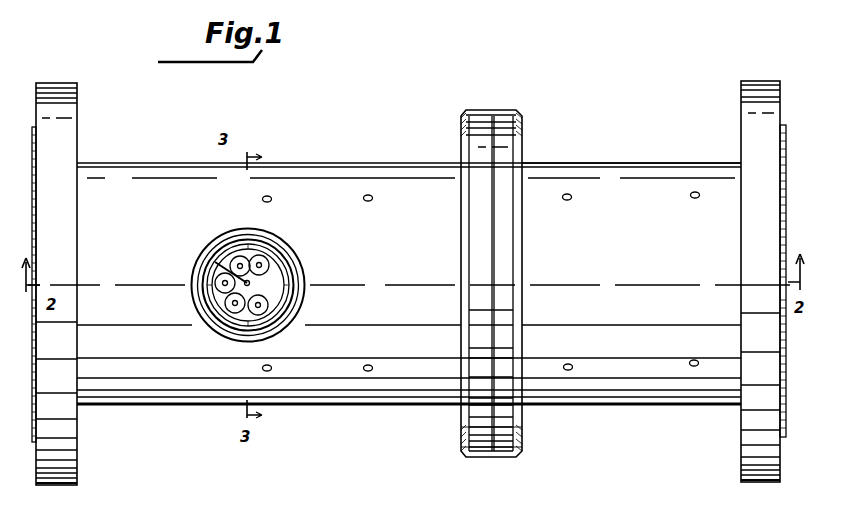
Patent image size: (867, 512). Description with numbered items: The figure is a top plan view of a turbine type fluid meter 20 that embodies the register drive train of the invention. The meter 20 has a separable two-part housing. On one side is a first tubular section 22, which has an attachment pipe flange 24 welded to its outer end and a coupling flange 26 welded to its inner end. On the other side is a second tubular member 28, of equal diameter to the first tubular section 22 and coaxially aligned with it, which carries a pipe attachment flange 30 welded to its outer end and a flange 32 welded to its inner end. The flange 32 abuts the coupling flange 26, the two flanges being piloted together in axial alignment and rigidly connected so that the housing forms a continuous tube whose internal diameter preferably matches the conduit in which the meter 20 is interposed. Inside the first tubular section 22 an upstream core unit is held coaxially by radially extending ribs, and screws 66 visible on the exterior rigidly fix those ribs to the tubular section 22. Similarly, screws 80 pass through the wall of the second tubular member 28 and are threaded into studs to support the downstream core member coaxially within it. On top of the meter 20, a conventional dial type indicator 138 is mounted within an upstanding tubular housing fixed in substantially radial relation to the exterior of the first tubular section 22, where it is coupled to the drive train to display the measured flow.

The turbine type fluid meter 20 is at (401, 153).
The first tubular section 22 is at (258, 161).
The attachment pipe flange 24 is at (65, 147).
The coupling flange 26 is at (461, 431).
The second tubular member 28 is at (634, 161).
The pipe attachment flange 30 is at (746, 98).
The flange 32 is at (518, 441).
The screws 66 is at (368, 203).
The screws 80 is at (567, 202).
The dial type indicator 138 is at (270, 279).